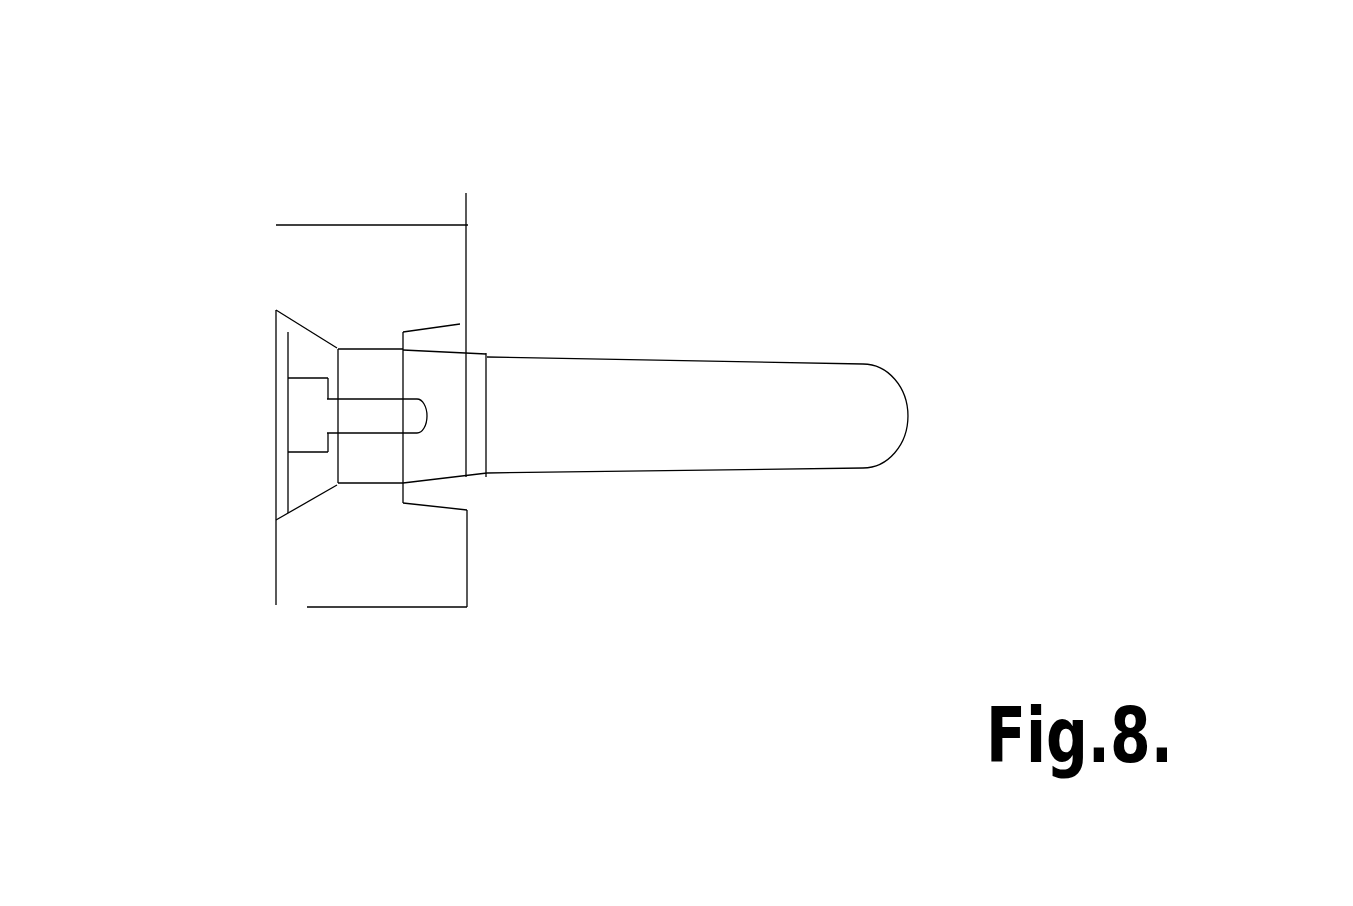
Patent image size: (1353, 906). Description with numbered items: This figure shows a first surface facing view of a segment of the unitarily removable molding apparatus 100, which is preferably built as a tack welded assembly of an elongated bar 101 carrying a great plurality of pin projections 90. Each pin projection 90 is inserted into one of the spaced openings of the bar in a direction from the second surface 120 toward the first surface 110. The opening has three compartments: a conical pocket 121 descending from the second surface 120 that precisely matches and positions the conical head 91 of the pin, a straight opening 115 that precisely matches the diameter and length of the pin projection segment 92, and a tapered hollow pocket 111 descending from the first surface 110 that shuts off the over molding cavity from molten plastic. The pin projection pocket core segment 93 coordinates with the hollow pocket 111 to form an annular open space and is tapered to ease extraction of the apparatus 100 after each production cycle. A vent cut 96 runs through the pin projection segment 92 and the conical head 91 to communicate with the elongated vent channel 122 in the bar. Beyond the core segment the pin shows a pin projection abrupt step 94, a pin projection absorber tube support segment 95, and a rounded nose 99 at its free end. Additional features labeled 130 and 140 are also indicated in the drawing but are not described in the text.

The pin projection 90 is at (773, 402).
The conical head 91 is at (304, 326).
The pin projection segment 92 is at (191, 647).
The pin projection pocket core segment 93 is at (441, 346).
The pin projection abrupt step 94 is at (488, 354).
The pin projection absorber tube support segment 95 is at (652, 356).
The vent cut 96 is at (315, 441).
The rounded end 99 is at (893, 371).
The unitarily removable molding apparatus 100 is at (979, 536).
The elongated bar 101 is at (334, 568).
The first surface 110 is at (469, 554).
The hollow pocket 111 is at (426, 324).
The straight opening 115 is at (264, 598).
The second surface 120 is at (273, 284).
The conical pocket 121 is at (276, 309).
The elongated vent channel 122 is at (273, 436).
The upper outline 130 is at (391, 222).
The bottom edge 140 is at (413, 609).